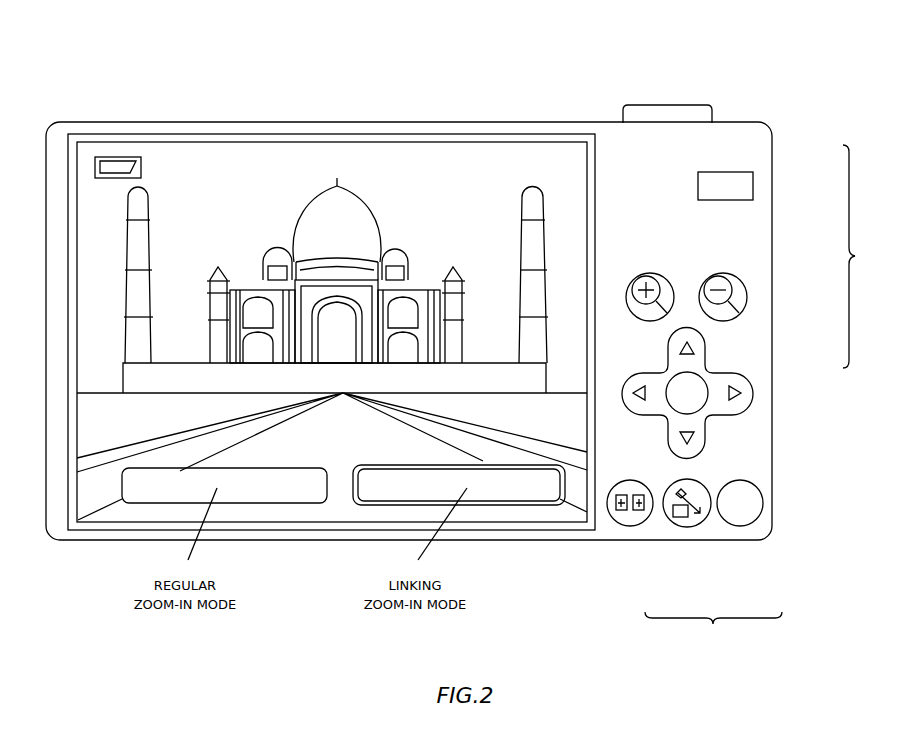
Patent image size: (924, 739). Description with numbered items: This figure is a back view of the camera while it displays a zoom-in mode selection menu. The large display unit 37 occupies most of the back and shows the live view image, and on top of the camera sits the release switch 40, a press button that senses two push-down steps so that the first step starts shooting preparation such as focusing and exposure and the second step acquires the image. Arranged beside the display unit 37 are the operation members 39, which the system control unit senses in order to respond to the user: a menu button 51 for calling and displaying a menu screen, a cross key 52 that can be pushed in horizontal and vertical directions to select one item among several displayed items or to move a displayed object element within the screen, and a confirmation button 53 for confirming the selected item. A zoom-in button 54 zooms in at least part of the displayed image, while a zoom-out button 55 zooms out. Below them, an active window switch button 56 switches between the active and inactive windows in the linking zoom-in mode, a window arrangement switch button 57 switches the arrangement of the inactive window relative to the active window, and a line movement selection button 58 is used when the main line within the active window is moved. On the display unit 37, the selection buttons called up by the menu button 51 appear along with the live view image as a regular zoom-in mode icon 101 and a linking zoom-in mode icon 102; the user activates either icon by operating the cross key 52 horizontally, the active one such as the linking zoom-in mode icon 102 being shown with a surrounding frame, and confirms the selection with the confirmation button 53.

The display unit 37 is at (520, 136).
The operation members 39 is at (767, 403).
The release switch 40 is at (672, 105).
The menu button 51 is at (745, 172).
The cross key 52 is at (706, 350).
The confirmation button 53 is at (700, 385).
The zoom-in button 54 is at (655, 274).
The zoom-out button 55 is at (730, 270).
The active window switch button 56 is at (650, 524).
The window arrangement switch button 57 is at (707, 525).
The line movement selection button 58 is at (765, 535).
The regular zoom-in mode icon 101 is at (307, 503).
The linking zoom-in mode icon 102 is at (493, 503).